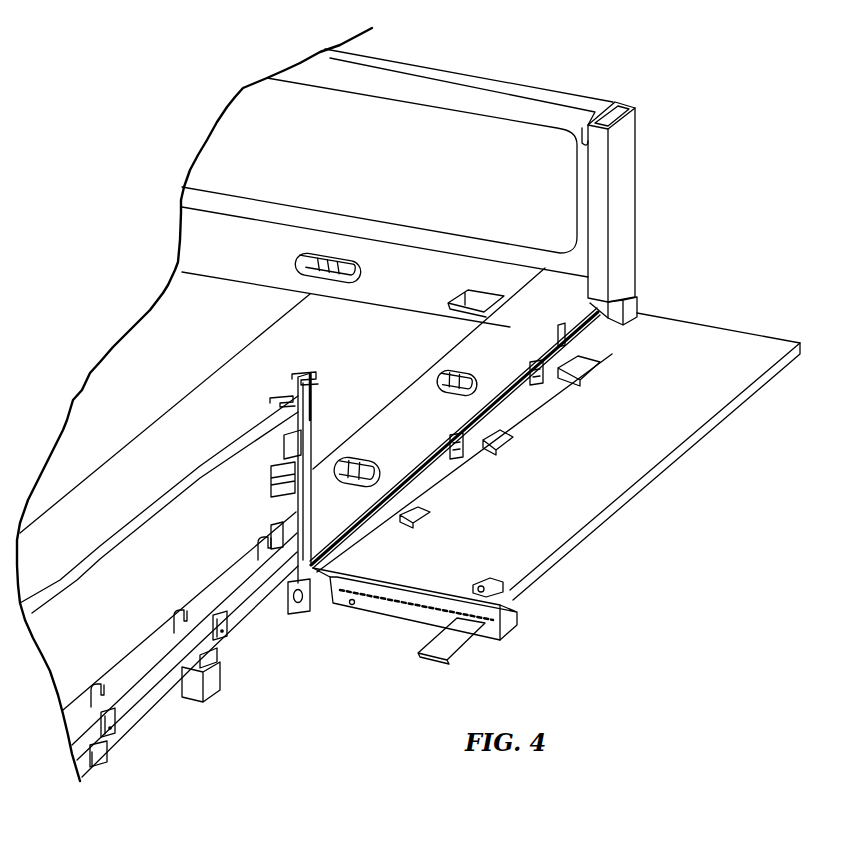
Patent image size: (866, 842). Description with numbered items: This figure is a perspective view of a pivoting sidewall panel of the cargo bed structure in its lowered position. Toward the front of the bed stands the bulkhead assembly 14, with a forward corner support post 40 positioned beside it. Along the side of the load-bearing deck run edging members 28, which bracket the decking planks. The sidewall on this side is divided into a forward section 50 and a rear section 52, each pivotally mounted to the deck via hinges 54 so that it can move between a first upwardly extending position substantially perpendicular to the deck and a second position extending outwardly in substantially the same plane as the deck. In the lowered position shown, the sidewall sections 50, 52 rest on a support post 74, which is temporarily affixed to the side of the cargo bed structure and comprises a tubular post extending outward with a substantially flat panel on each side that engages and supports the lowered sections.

The bulkhead assembly 14 is at (604, 84).
The forward corner support post 40 is at (620, 193).
The edging members 28 is at (508, 337).
The forward section 50 is at (683, 446).
The rear section 52 is at (200, 534).
The hinges 54 is at (225, 637).
The support post 74 is at (515, 622).